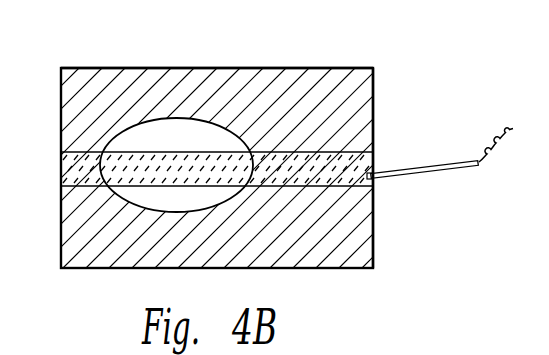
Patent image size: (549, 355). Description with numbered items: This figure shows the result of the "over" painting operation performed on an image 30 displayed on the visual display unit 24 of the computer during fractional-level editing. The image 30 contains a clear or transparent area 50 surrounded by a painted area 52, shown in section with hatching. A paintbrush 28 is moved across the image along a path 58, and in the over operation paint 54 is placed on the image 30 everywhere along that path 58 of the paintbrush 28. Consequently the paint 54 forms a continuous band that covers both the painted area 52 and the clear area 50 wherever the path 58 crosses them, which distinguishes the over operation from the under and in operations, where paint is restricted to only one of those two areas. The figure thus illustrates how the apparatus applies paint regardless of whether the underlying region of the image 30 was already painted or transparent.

The visual display unit 24 is at (373, 130).
The paintbrush 28 is at (446, 170).
The image 30 is at (373, 85).
The clear or transparent area 50 is at (176, 133).
The painted area 52 is at (280, 92).
The paint 54 is at (72, 166).
The path 58 is at (375, 160).